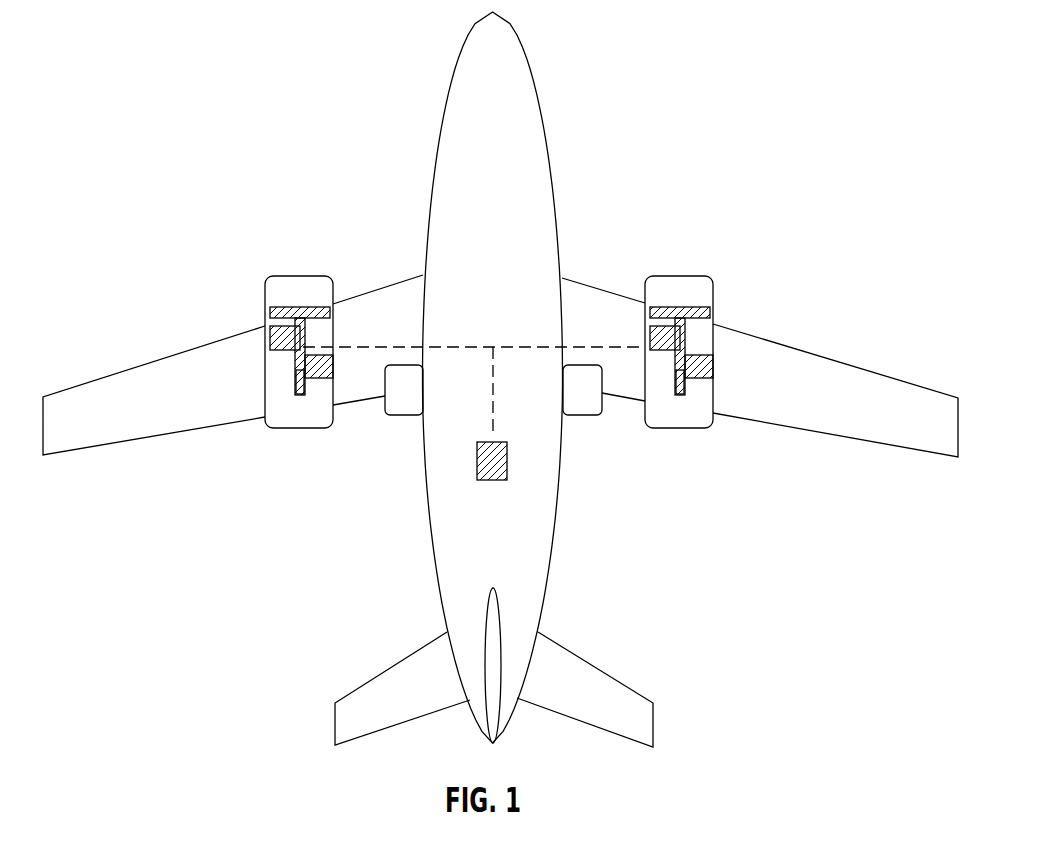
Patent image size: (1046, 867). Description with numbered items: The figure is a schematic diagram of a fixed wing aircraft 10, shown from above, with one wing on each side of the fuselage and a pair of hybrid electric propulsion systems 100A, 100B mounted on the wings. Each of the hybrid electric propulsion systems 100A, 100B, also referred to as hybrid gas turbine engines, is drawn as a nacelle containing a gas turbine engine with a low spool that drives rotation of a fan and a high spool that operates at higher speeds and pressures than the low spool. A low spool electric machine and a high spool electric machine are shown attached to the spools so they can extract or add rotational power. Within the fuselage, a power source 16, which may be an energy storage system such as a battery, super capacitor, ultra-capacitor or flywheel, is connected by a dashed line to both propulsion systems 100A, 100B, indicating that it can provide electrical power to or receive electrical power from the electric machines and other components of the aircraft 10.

The aircraft 10 is at (388, 120).
The power source 16 is at (490, 480).
The hybrid electric propulsion system 100A is at (269, 356).
The hybrid electric propulsion system 100B is at (670, 354).